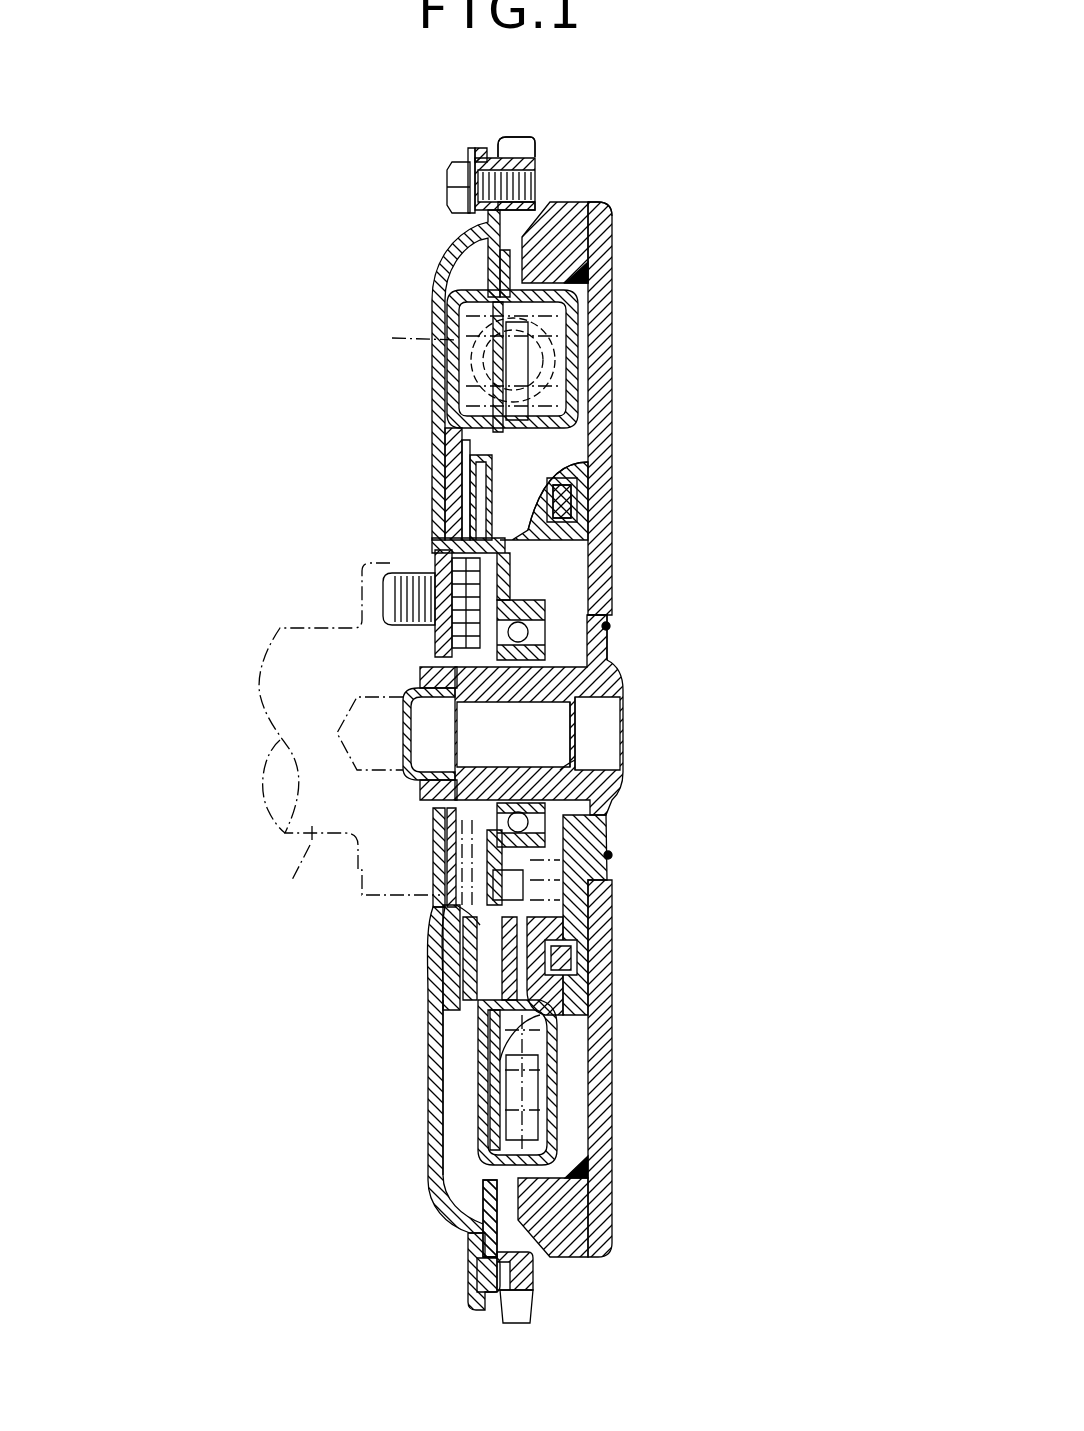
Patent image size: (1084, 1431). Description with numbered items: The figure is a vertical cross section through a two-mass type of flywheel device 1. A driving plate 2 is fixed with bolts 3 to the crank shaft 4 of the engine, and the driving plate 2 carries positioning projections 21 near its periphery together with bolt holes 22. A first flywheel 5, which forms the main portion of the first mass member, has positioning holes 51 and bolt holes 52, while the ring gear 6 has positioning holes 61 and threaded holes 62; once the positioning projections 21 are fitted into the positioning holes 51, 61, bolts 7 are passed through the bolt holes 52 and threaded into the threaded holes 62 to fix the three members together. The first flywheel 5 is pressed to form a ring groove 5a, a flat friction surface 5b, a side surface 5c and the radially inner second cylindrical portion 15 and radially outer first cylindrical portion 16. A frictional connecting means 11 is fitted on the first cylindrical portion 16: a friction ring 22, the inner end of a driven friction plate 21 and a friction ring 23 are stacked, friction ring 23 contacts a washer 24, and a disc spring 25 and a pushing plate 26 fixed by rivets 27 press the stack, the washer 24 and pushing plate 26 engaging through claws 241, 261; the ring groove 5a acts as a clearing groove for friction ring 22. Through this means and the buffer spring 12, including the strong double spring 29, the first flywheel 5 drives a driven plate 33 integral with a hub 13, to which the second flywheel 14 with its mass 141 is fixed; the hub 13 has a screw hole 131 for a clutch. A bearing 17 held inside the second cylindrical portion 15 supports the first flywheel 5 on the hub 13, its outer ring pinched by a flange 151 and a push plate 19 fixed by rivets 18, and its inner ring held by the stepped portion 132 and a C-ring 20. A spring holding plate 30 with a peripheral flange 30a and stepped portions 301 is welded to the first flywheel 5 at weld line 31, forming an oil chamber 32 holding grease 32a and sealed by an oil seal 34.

The two-mass type of flywheel device 1 is at (604, 122).
The driving plate 2 is at (440, 270).
The positioning projections 21 is at (452, 430).
The bolt holes 22 is at (450, 512).
The friction ring 23 is at (470, 462).
The washer 24 is at (413, 530).
The claws 241 is at (562, 430).
The disc spring 25 is at (548, 470).
The pushing plate 26 is at (572, 548).
The claws 261 is at (572, 442).
The rivets 27 is at (542, 584).
The strong double spring 29 is at (404, 336).
The bolts 3 is at (390, 562).
The spring holding plate 30 is at (572, 312).
The flange 30a is at (512, 268).
The stepped portions 301 is at (649, 1065).
The weld line 31 is at (562, 240).
The oil chamber 32 is at (556, 1135).
The grease 32a is at (540, 1108).
The driven plate 33 is at (522, 368).
The oil seal 34 is at (556, 958).
The crank shaft 4 is at (349, 733).
The first flywheel 5 is at (442, 1118).
The ring groove 5a is at (445, 1003).
The friction surface 5b is at (472, 1030).
The side surface 5c is at (470, 1235).
The positioning holes 51 is at (610, 626).
The bolt holes 52 is at (600, 592).
The ring gear 6 is at (502, 145).
The positioning holes 61 is at (530, 1277).
The threaded holes 62 is at (535, 185).
The bolts 7 is at (448, 188).
The frictional connecting means 11 is at (462, 480).
The buffer spring 12 is at (556, 350).
The hub 13 is at (602, 667).
The screw hole 131 is at (580, 755).
The stepped portion 132 is at (560, 785).
The second flywheel 14 is at (606, 500).
The mass 141 is at (578, 207).
The second cylindrical portion 15 is at (552, 880).
The flange 151 is at (600, 866).
The first cylindrical portion 16 is at (592, 988).
The bearing 17 is at (532, 832).
The rivets 18 is at (465, 950).
The push plate 19 is at (450, 907).
The C-ring 20 is at (433, 840).